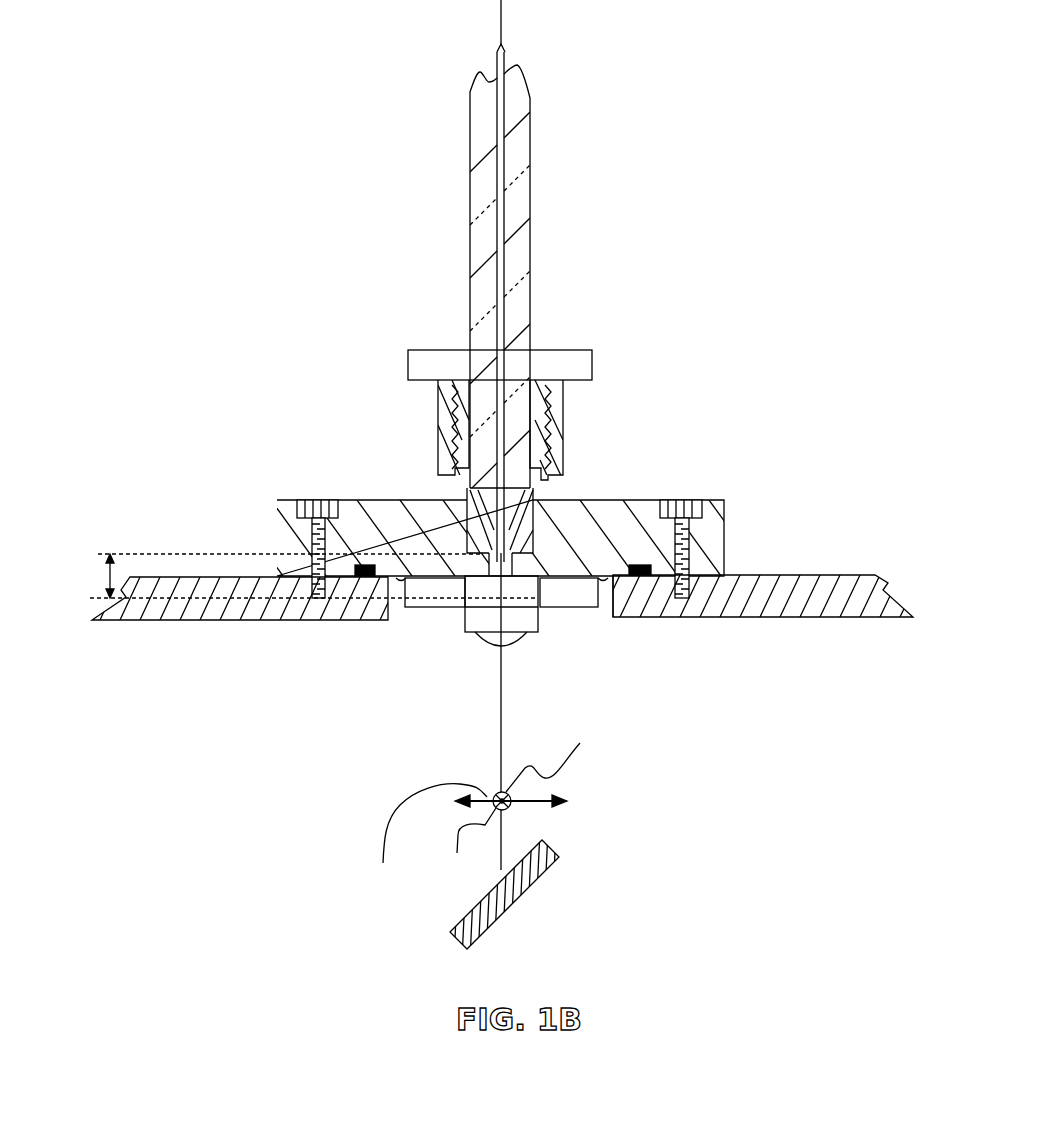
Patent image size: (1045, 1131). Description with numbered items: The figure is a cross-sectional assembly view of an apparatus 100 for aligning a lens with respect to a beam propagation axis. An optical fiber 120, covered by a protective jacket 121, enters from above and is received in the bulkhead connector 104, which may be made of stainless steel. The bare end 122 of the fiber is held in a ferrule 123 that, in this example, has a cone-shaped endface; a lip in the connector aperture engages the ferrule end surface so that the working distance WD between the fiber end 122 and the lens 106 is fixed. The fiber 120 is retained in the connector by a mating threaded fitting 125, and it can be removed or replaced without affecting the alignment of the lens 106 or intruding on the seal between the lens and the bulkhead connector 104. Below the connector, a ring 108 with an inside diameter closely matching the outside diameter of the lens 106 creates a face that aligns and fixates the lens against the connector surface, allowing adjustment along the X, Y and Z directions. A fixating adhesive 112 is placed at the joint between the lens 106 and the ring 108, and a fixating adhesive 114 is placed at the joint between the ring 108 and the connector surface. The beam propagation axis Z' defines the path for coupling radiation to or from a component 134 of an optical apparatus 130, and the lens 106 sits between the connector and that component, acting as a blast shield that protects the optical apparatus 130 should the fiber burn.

The apparatus 100 is at (205, 318).
The optical fiber 120 is at (505, 66).
The protective jacket 121 is at (468, 190).
The mating threaded fitting 125 is at (408, 370).
The ferrule 123 is at (483, 503).
The end of the fiber 122 is at (505, 567).
The bulkhead connector 104 is at (725, 523).
The optical apparatus 130 is at (217, 621).
The ring 108 is at (442, 605).
The fixating adhesive 112 is at (543, 612).
The lens 106 is at (490, 642).
The fixating adhesive 114 is at (603, 586).
The component 134 is at (560, 847).